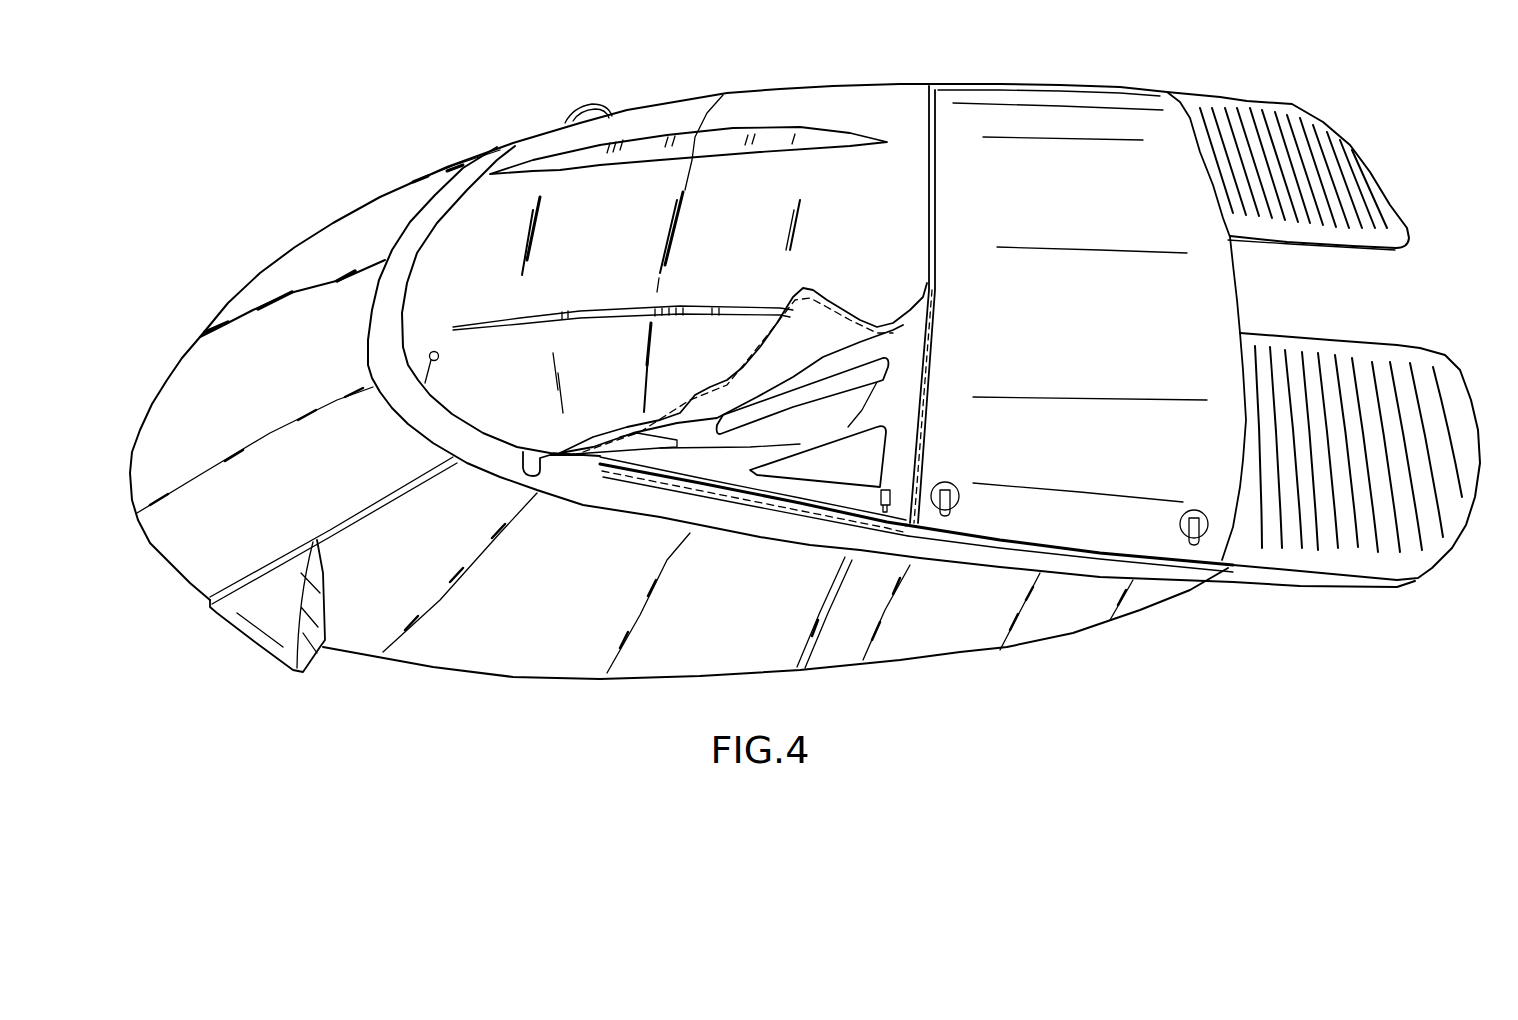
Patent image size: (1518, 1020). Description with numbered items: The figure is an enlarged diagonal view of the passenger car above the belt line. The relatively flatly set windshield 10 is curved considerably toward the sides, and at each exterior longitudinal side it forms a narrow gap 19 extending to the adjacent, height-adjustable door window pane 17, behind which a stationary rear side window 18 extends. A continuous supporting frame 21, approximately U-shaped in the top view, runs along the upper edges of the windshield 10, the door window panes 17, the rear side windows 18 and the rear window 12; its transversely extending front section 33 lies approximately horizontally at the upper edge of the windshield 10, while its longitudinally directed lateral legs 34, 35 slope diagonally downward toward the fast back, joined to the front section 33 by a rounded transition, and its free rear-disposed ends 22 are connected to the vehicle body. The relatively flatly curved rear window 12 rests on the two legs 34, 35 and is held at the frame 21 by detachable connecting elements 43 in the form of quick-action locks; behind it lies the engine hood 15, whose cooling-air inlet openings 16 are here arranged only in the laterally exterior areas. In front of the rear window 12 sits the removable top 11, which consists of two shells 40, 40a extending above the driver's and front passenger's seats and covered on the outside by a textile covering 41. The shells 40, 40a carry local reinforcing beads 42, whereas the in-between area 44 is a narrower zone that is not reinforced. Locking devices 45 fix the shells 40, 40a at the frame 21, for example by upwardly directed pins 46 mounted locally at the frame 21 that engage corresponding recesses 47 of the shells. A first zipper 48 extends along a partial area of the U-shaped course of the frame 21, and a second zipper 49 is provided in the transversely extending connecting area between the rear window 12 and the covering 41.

The windshield 10 is at (333, 240).
The removable top 11 is at (780, 120).
The rear window 12 is at (1060, 147).
The engine hood 15 is at (1343, 263).
The cooling-air inlet openings 16 is at (1287, 150).
The door window pane 17 is at (378, 633).
The rear side window 18 is at (895, 652).
The gap 19 is at (357, 503).
The supporting frame 21 is at (393, 277).
The free rear-disposed ends 22 is at (1397, 585).
The transversely extending front section 33 is at (367, 347).
The lateral leg 34 is at (1100, 572).
The lateral leg 35 is at (1118, 88).
The interior shell 40 is at (693, 470).
The shell 40a is at (675, 117).
The textile covering 41 is at (850, 297).
The reinforcing beads 42 is at (793, 473).
The detachable connecting elements 43 is at (962, 512).
The in-between area 44 is at (490, 230).
The locking devices 45 is at (877, 518).
The pins 46 is at (910, 533).
The recesses 47 is at (881, 490).
The first zipper 48 is at (640, 477).
The second zipper 49 is at (903, 330).